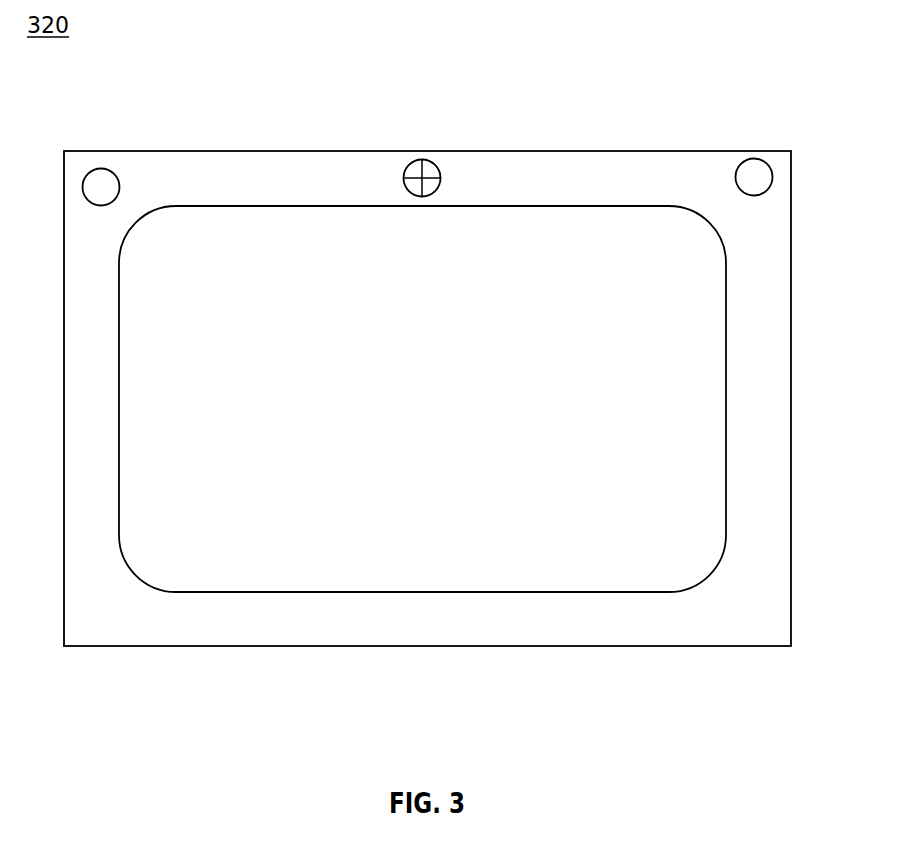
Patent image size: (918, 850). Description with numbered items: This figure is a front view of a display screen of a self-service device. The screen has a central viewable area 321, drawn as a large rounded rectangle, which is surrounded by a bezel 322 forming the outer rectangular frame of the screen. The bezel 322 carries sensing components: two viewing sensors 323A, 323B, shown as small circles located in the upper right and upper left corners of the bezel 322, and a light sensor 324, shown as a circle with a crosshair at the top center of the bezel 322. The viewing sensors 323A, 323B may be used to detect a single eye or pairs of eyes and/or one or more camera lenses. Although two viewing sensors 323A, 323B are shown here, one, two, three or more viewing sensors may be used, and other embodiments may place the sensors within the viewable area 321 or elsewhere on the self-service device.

The viewable area 321 is at (487, 288).
The bezel 322 is at (759, 278).
The viewing sensor 323A is at (755, 173).
The viewing sensor 323B is at (98, 183).
The light sensor 324 is at (405, 175).